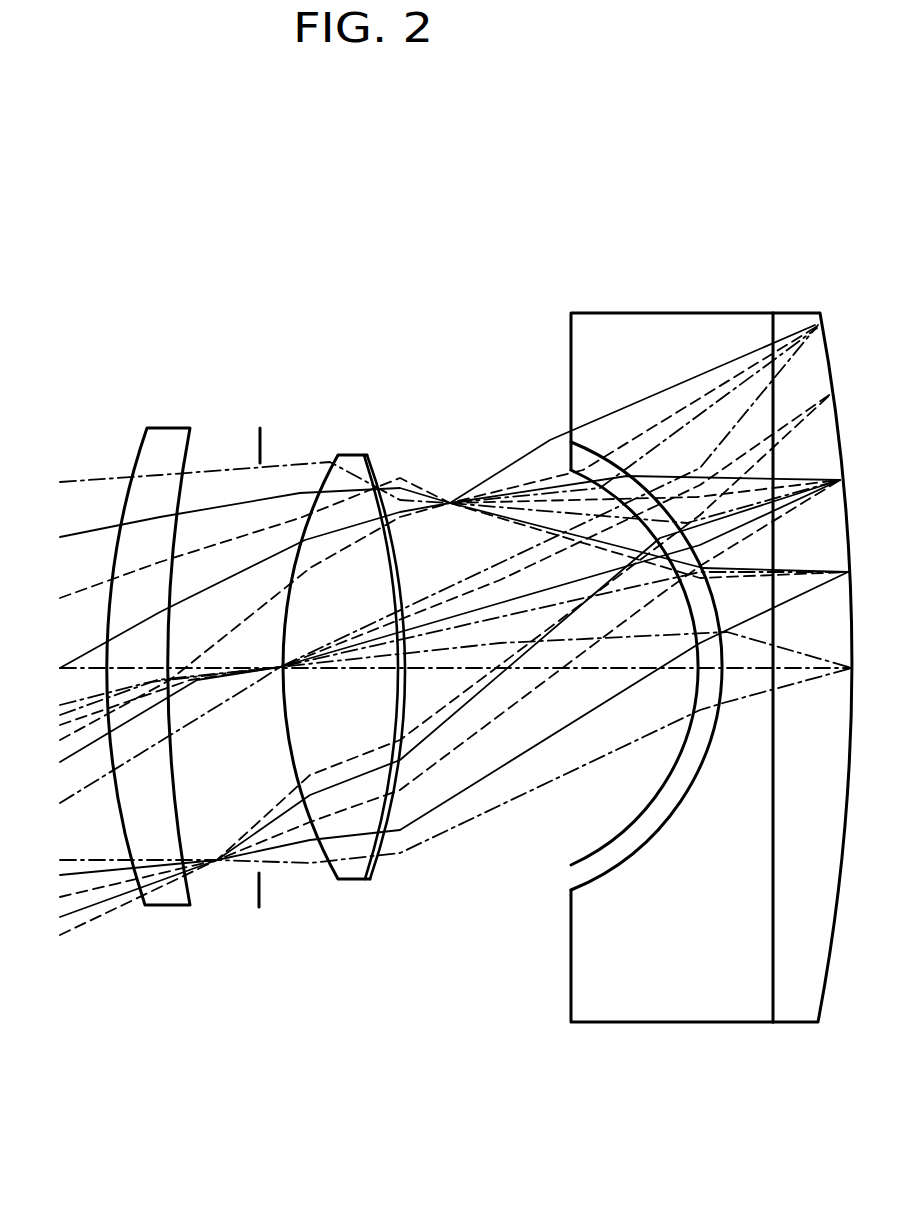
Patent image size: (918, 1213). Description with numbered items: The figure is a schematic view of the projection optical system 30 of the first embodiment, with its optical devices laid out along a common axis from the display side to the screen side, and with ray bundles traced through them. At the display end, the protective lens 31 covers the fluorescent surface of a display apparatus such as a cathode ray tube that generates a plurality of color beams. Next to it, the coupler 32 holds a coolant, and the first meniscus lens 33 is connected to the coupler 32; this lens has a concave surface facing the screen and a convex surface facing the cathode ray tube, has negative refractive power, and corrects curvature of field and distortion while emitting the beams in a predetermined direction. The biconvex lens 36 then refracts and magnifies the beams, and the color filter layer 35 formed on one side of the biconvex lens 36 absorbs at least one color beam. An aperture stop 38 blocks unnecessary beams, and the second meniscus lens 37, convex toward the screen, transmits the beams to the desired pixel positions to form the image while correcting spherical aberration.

The projection optical system 30 is at (507, 256).
The protective lens 31 is at (793, 323).
The coupler 32 is at (675, 323).
The first meniscus lens 33 is at (582, 452).
The color filter layer 35 is at (368, 455).
The biconvex lens 36 is at (347, 463).
The second meniscus lens 37 is at (168, 428).
The aperture stop 38 is at (259, 442).